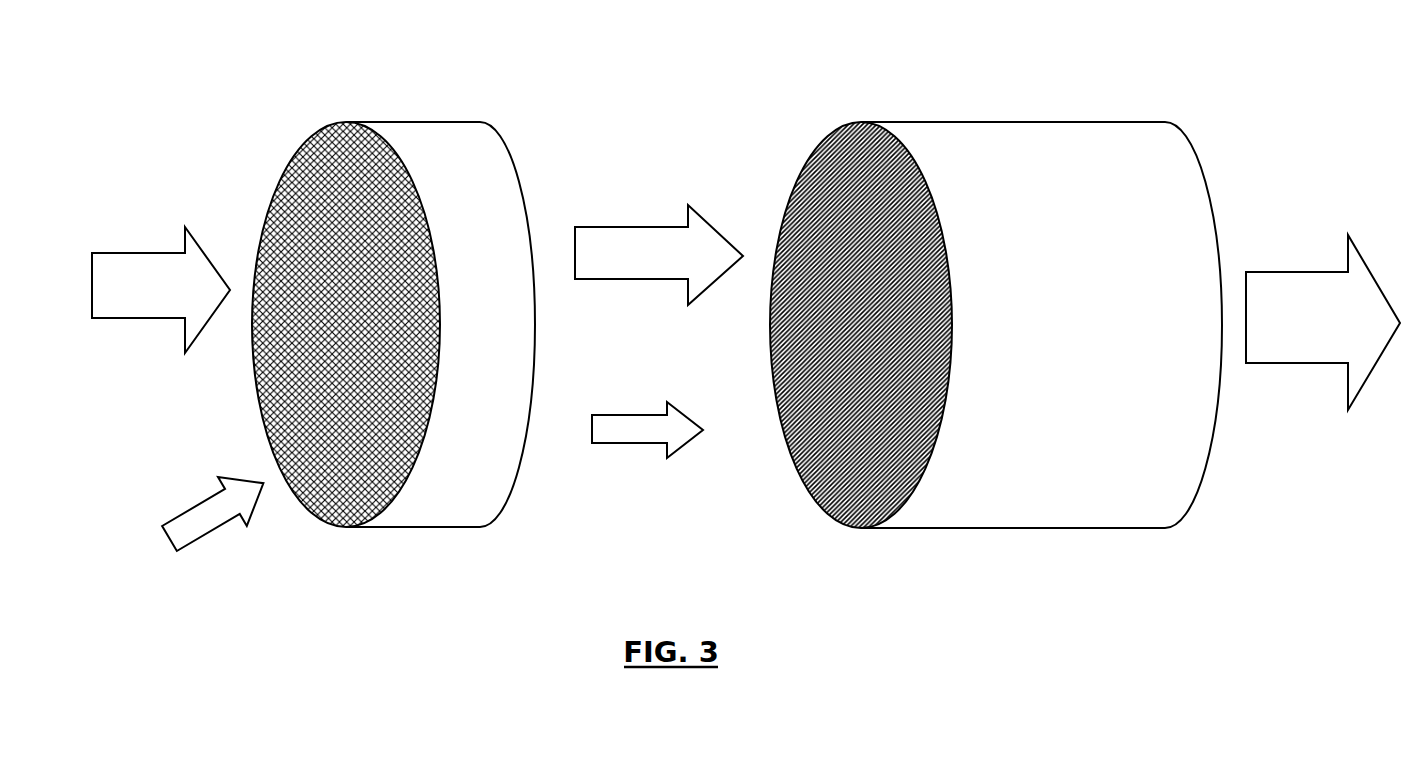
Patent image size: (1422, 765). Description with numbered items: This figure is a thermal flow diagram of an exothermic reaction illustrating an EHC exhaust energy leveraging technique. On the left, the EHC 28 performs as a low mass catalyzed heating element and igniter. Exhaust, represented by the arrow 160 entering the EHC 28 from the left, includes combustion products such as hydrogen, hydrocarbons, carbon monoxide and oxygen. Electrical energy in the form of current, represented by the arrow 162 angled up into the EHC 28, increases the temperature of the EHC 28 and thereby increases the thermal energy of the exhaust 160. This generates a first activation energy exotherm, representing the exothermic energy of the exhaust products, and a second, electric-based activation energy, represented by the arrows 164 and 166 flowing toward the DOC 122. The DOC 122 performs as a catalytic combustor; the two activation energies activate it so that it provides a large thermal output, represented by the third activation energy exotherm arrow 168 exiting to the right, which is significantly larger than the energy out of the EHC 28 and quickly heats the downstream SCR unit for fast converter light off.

The EHC 28 is at (393, 305).
The DOC 122 is at (996, 305).
The exhaust 160 is at (161, 274).
The current 162 is at (198, 511).
The first activation energy q1 exotherm 164 is at (659, 241).
The second activation energy q2 166 is at (647, 415).
The third activation energy q3 exotherm 168 is at (1323, 307).